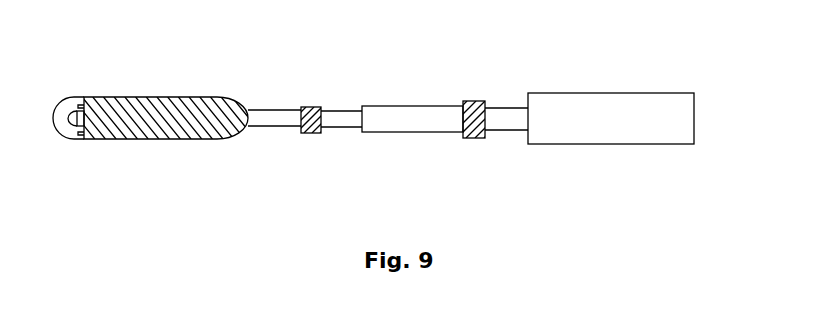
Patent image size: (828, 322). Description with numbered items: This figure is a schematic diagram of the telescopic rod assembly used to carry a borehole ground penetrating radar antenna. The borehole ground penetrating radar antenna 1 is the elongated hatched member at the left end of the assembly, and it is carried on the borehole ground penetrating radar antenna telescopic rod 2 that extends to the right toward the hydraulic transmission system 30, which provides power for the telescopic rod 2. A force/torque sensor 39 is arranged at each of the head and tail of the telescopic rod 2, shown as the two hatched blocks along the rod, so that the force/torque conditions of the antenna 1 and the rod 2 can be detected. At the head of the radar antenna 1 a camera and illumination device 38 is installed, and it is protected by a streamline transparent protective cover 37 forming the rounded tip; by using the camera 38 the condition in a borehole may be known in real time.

The borehole ground penetrating radar antenna 1 is at (158, 112).
The borehole ground penetrating radar antenna telescopic rod 2 is at (408, 120).
The hydraulic transmission system 30 is at (613, 127).
The streamline transparent protective cover 37 is at (70, 98).
The camera and illumination device 38 is at (78, 119).
The force/torque sensor 39 is at (462, 136).